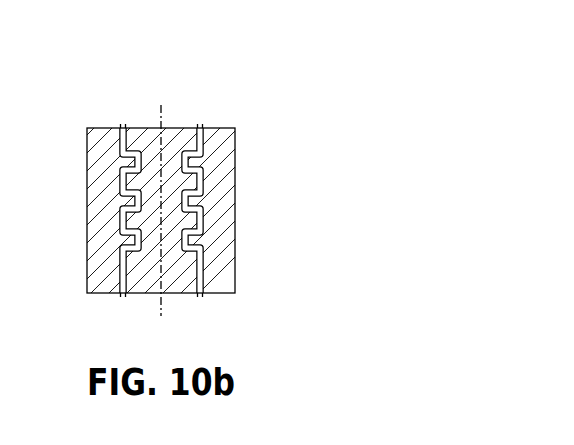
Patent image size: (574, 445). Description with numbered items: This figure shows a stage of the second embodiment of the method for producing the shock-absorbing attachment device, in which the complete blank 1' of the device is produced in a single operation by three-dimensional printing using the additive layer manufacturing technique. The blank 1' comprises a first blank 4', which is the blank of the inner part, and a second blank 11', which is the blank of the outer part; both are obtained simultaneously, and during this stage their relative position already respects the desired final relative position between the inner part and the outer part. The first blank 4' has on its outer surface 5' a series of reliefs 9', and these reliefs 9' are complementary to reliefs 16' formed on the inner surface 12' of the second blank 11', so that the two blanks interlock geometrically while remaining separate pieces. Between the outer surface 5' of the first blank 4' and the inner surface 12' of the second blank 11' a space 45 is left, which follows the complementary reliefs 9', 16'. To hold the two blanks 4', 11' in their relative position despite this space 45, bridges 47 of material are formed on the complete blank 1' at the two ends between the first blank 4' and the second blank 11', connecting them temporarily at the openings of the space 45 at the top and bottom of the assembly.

The blank of the device 1' is at (238, 227).
The first blank 4' is at (180, 181).
The bridges of material 47 is at (122, 127).
The outer surface 5' is at (87, 210).
The reliefs 9' is at (83, 217).
The space 45 is at (122, 267).
The reliefs 16' is at (240, 212).
The inner surface 12' is at (250, 185).
The second blank 11' is at (238, 237).